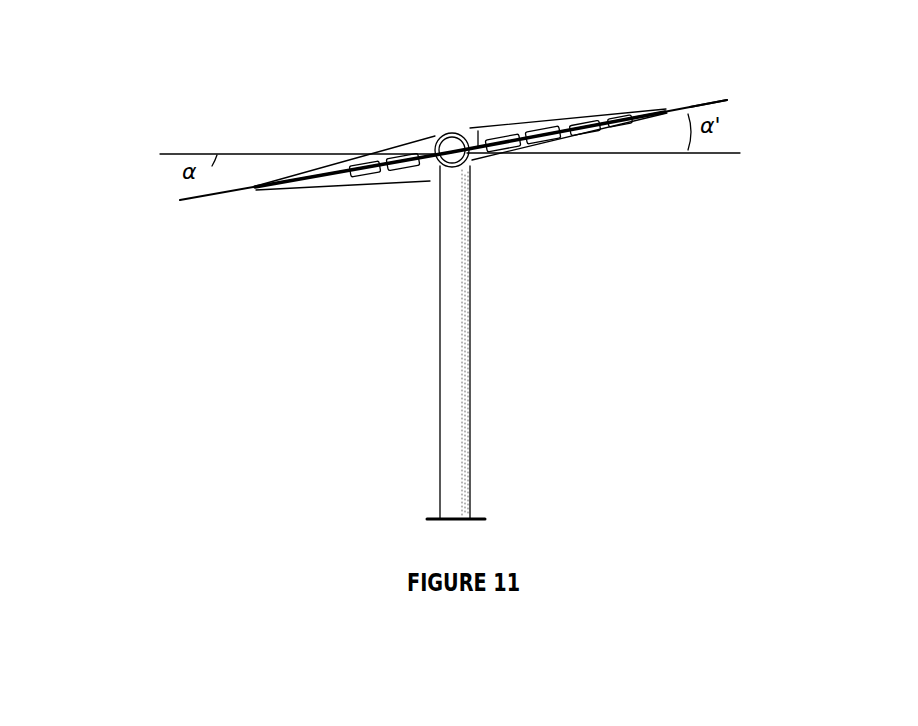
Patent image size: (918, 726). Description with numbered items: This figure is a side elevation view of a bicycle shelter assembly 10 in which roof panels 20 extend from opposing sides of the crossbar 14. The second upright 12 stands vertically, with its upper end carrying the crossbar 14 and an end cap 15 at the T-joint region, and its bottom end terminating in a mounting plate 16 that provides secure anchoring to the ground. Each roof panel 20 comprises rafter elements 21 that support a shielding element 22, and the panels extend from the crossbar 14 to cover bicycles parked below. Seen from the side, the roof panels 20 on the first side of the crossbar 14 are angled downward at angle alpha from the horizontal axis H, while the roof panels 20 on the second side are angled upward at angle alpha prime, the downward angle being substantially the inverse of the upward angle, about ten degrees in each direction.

The shelter assembly 10 is at (352, 330).
The second upright 12 is at (458, 332).
The crossbar 14 is at (432, 157).
The end cap 15 is at (450, 138).
The mounting plate 16 is at (475, 514).
The roof panel 20 is at (307, 183).
The rafter element 21 is at (487, 128).
The shielding element 22 is at (700, 100).